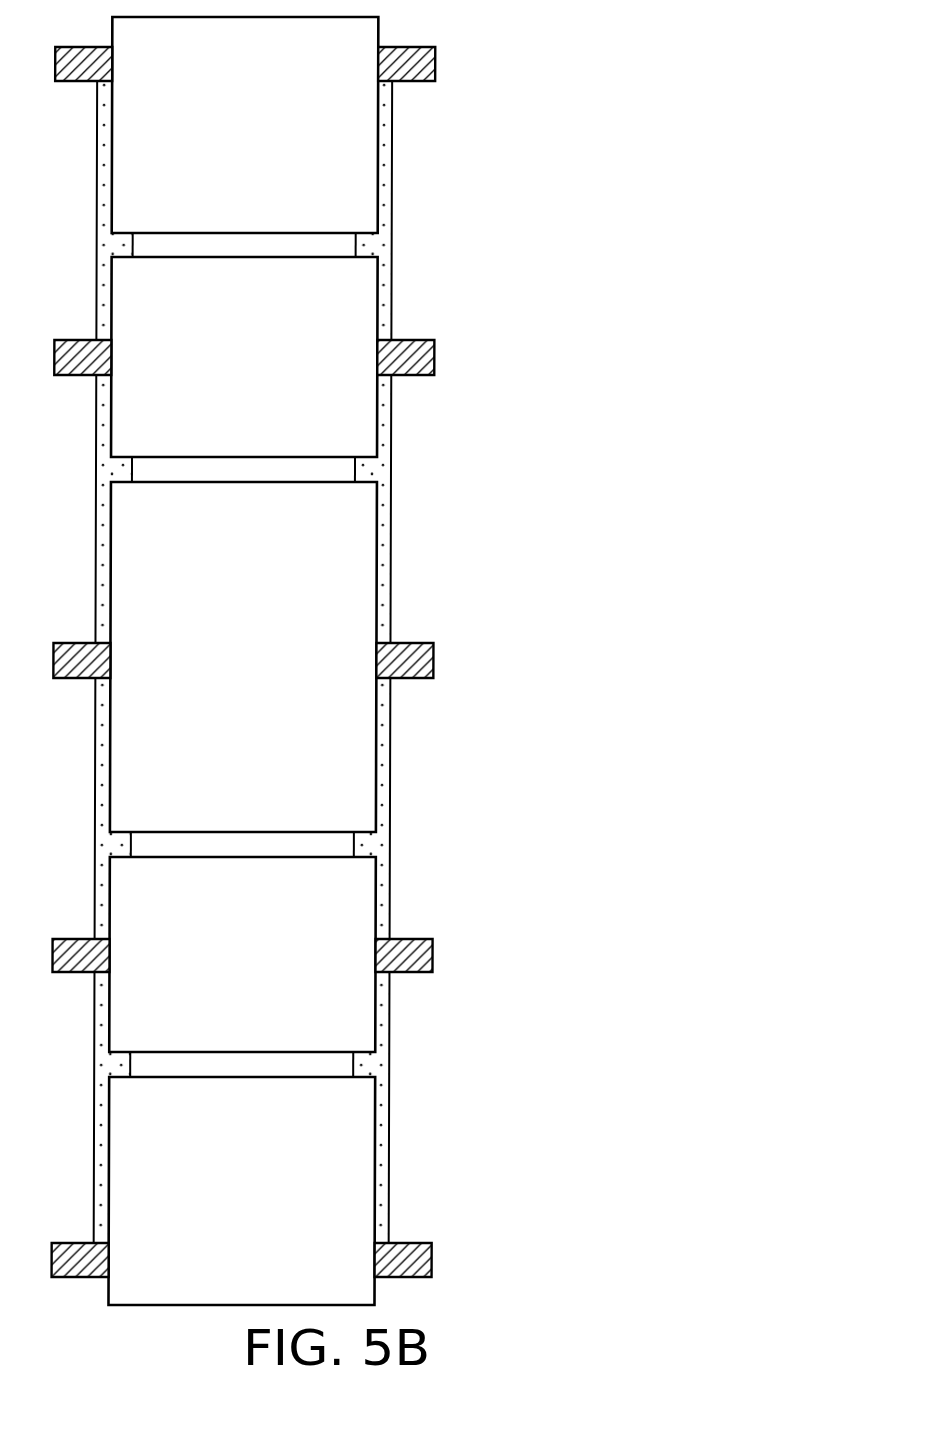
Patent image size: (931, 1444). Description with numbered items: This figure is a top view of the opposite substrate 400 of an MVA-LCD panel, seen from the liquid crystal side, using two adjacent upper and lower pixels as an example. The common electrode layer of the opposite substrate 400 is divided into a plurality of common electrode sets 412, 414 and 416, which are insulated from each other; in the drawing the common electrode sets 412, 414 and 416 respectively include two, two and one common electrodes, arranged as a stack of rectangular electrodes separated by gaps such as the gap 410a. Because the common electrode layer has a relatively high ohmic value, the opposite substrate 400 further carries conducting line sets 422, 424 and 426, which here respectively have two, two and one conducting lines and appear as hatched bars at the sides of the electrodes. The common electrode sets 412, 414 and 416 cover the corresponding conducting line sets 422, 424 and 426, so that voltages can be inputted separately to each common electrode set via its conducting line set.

The opposite substrate 400 is at (677, 1345).
The gap between components 410a is at (342, 247).
The common electrode set 412 is at (355, 157).
The common electrode set 414 is at (348, 418).
The common electrode set 416 is at (347, 725).
The conducting line set 422 is at (418, 63).
The conducting line set 424 is at (415, 360).
The conducting line set 426 is at (415, 661).